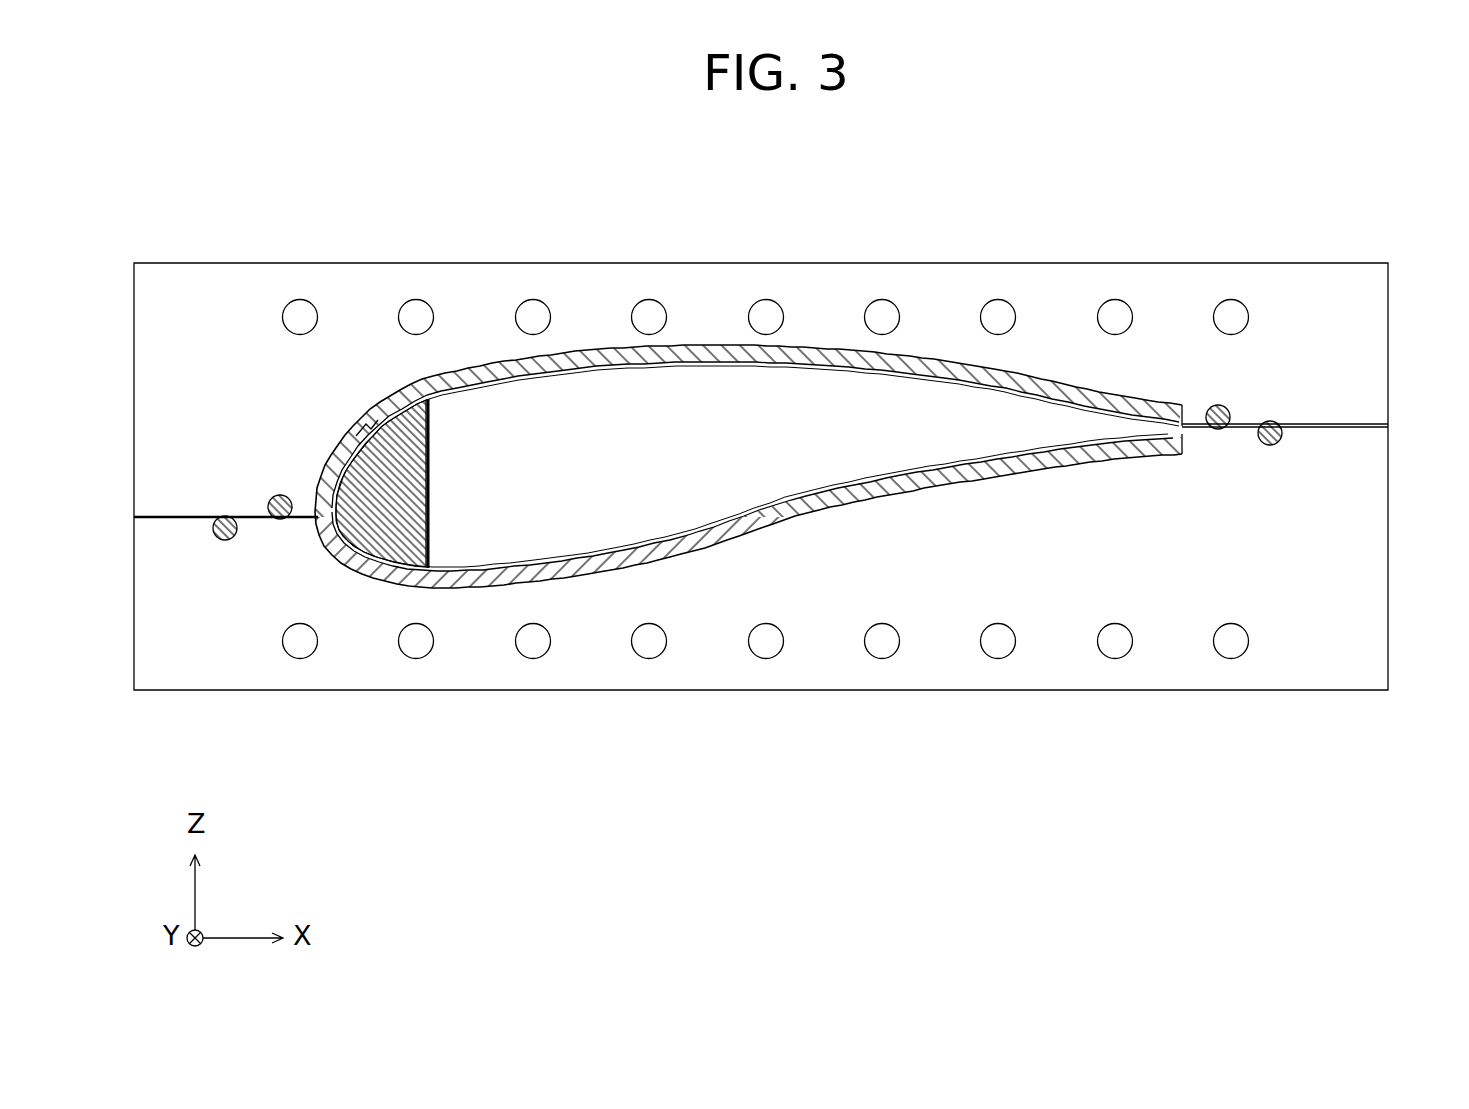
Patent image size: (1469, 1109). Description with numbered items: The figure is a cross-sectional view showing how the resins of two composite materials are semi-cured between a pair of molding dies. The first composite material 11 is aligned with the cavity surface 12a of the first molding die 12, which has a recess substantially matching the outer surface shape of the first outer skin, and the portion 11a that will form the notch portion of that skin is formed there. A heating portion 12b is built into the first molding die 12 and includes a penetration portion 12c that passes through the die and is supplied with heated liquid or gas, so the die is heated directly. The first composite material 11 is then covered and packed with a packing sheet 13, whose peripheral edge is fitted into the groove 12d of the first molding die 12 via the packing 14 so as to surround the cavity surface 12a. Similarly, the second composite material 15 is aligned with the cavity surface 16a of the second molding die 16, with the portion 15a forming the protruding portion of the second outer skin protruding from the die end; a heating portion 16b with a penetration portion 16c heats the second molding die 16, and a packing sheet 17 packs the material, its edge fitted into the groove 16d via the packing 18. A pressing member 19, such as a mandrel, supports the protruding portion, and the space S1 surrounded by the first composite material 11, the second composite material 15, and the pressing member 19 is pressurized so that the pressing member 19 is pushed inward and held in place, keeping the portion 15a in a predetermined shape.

The first composite material 11 is at (713, 337).
The portion forming the notch portion 11a is at (333, 450).
The first molding die 12 is at (1287, 240).
The cavity surface of the first molding die 12a is at (808, 348).
The heating portion 12b is at (1122, 300).
The penetration portion 12c is at (1057, 317).
The groove 12d is at (1232, 410).
The packing sheet 13 is at (598, 362).
The packing 14 is at (1225, 406).
The second composite material 15 is at (693, 558).
The portion forming the protruding portion 15a is at (318, 476).
The second molding die 16 is at (1155, 700).
The cavity surface of the second molding die 16a is at (797, 525).
The heating portion 16b is at (997, 658).
The penetration portion 16c is at (1057, 641).
The groove 16d is at (1278, 440).
The packing sheet 17 is at (588, 575).
The packing 18 is at (1265, 442).
The pressing member 19 is at (385, 535).
The space S1 is at (497, 535).